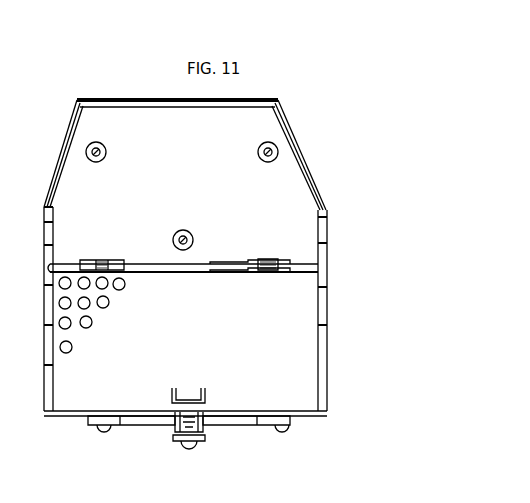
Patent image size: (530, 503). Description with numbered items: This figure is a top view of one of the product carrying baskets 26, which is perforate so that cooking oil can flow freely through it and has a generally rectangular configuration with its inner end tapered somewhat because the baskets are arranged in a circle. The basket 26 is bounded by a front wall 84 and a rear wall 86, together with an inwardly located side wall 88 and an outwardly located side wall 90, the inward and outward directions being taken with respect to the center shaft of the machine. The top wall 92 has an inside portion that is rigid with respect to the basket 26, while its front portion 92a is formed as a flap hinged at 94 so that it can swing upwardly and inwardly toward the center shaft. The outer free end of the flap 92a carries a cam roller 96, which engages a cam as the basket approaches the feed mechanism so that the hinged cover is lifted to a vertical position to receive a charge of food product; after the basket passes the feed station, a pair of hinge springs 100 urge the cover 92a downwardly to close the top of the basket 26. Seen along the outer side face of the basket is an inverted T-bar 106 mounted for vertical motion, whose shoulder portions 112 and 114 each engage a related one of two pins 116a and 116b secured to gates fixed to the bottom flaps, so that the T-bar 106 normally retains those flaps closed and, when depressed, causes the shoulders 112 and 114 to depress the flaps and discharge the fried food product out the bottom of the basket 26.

The basket 26 is at (46, 166).
The front wall 84 is at (46, 236).
The rear wall 86 is at (328, 240).
The side wall 88 is at (131, 101).
The side wall 90 is at (80, 414).
The top wall 92 is at (275, 210).
The front portion of top wall 92a is at (265, 355).
The hinge 94 is at (229, 262).
The cam roller 96 is at (205, 432).
The hinge springs 100 is at (100, 262).
The inverted T-bar 106 is at (189, 434).
The shoulder portion 112 is at (154, 418).
The shoulder portion 114 is at (244, 422).
The pin 116a is at (101, 431).
The pin 116b is at (284, 432).